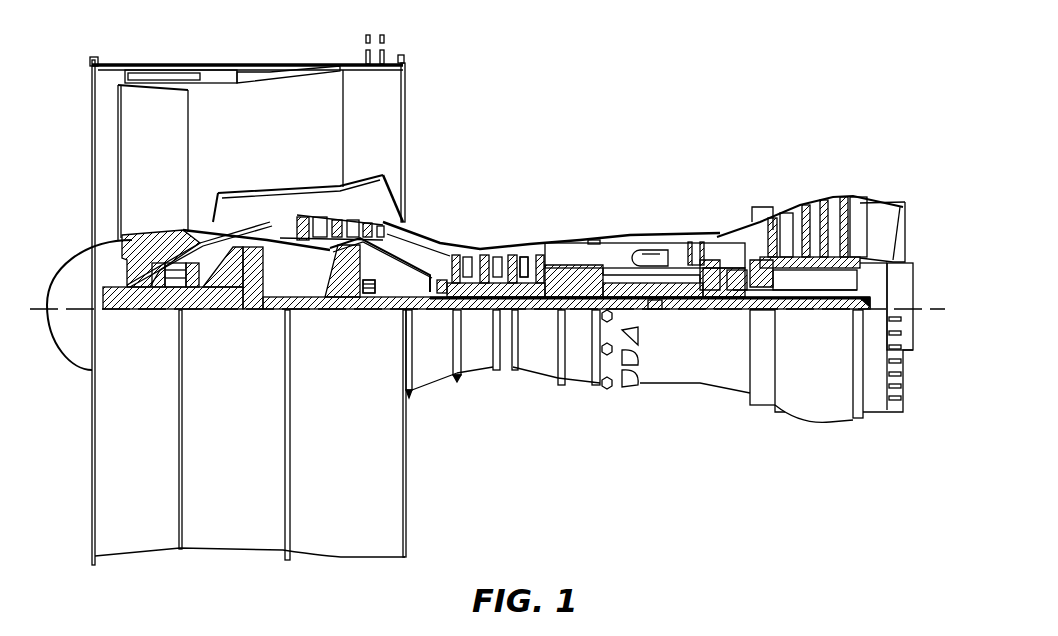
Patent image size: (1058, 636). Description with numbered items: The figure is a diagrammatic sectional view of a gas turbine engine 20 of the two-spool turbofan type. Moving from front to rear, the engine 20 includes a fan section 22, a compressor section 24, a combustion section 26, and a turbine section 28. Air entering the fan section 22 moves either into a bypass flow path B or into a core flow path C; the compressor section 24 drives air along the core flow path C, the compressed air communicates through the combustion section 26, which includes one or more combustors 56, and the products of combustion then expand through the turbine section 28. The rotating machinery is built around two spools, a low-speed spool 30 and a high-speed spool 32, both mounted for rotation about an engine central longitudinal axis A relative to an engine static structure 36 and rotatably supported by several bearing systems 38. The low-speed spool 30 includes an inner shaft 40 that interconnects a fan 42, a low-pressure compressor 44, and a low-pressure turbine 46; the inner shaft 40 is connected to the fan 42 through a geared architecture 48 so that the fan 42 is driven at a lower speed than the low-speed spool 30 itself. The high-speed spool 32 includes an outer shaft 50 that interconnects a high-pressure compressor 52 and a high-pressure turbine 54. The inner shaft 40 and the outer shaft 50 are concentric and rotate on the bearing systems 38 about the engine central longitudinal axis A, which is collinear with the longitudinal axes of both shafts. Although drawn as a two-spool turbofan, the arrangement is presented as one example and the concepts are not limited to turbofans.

The gas turbine engine 20 is at (693, 112).
The fan section 22 is at (76, 112).
The compressor section 24 is at (444, 232).
The combustion section 26 is at (627, 205).
The turbine section 28 is at (765, 190).
The low-speed spool 30 is at (546, 310).
The high-speed spool 32 is at (577, 283).
The engine static structure 36 is at (578, 393).
The bearing systems 38 is at (371, 308).
The inner shaft 40 is at (421, 310).
The fan 42 is at (160, 162).
The low-pressure compressor 44 is at (352, 203).
The low-pressure turbine 46 is at (805, 202).
The geared architecture 48 is at (248, 302).
The outer shaft 50 is at (658, 308).
The high-pressure compressor 52 is at (521, 240).
The high-pressure turbine 54 is at (698, 241).
The combustor 56 is at (641, 255).
The engine central longitudinal axis A is at (945, 308).
The bypass flow path B is at (375, 118).
The core flow path C is at (240, 214).